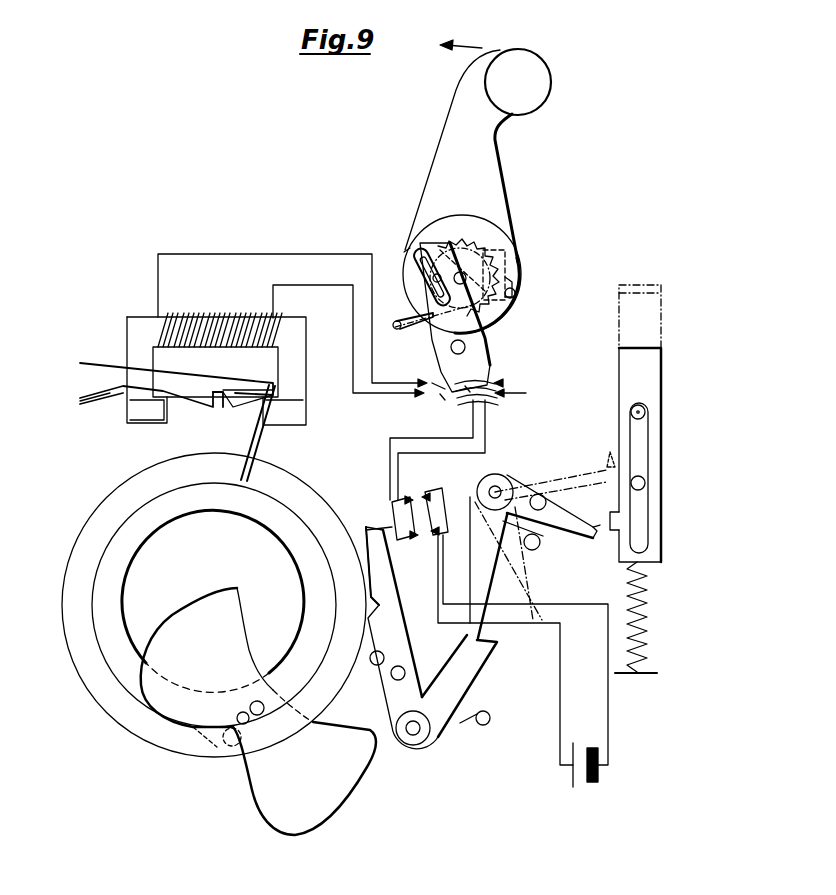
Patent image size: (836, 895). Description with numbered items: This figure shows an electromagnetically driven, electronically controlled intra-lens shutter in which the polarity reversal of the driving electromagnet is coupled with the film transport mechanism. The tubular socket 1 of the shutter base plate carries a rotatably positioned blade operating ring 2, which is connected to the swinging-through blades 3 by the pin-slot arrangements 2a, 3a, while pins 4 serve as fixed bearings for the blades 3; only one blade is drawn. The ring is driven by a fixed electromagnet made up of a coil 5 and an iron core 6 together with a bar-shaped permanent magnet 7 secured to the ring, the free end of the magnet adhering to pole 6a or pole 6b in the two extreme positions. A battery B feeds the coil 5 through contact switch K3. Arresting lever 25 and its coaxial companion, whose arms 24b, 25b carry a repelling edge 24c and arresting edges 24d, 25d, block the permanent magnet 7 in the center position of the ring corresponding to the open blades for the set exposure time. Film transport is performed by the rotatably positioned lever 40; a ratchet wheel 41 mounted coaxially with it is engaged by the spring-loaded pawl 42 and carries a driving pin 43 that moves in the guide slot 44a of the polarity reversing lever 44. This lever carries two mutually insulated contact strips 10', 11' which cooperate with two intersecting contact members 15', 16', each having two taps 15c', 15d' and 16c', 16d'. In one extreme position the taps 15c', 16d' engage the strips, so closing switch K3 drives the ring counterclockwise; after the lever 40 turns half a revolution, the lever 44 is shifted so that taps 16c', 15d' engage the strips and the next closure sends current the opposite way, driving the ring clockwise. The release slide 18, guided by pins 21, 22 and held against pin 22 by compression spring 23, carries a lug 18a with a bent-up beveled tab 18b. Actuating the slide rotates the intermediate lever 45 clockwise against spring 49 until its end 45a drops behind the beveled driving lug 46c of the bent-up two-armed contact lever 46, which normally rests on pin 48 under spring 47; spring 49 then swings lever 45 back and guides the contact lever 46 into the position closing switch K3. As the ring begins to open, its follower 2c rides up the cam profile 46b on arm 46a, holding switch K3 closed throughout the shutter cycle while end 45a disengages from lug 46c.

The tubular socket 1 is at (283, 530).
The blade operating ring 2 is at (316, 490).
The pin-slot arrangement 2a is at (227, 747).
The follower 2c is at (376, 652).
The swinging-through blade 3 is at (230, 633).
The pin-slot arrangement 3a is at (238, 716).
The pin 4 is at (262, 713).
The coil 5 is at (213, 312).
The iron core 6 is at (300, 365).
The pole 6a is at (283, 425).
The pole 6b is at (143, 423).
The permanent magnet 7 is at (245, 438).
The contact strip 10' is at (444, 441).
The contact strip 11' is at (474, 373).
The contact member 15' is at (429, 369).
The tap 15c' is at (528, 393).
The tap 15d' is at (292, 320).
The contact member 16' is at (426, 412).
The tap 16c' is at (348, 352).
The tap 16d' is at (519, 366).
The release slide 18 is at (650, 370).
The lug 18a is at (618, 518).
The tab 18b is at (607, 535).
The pin 21 is at (645, 412).
The pin 22 is at (645, 483).
The compression spring 23 is at (647, 603).
The arm 24b is at (100, 372).
The repelling edge 24c is at (233, 408).
The arresting edge 24d is at (228, 385).
The arresting lever 25 is at (195, 405).
The arm 25b is at (112, 410).
The arresting edge 25d is at (211, 410).
The lever 40 is at (465, 103).
The ratchet wheel 41 is at (468, 243).
The pawl 42 is at (513, 278).
The driving pin 43 is at (402, 250).
The polarity reversing lever 44 is at (473, 337).
The guide slot 44a is at (428, 290).
The intermediate lever 45 is at (570, 530).
The intermediate lever end 45a is at (470, 636).
The contact lever 46 is at (413, 745).
The arm 46a is at (390, 582).
The cam profile 46b is at (367, 565).
The driving lug 46c is at (490, 648).
The spring 47 is at (483, 725).
The pin 48 is at (377, 665).
The spring 49 is at (522, 495).
The battery B is at (583, 748).
The contact switch K3 is at (418, 515).